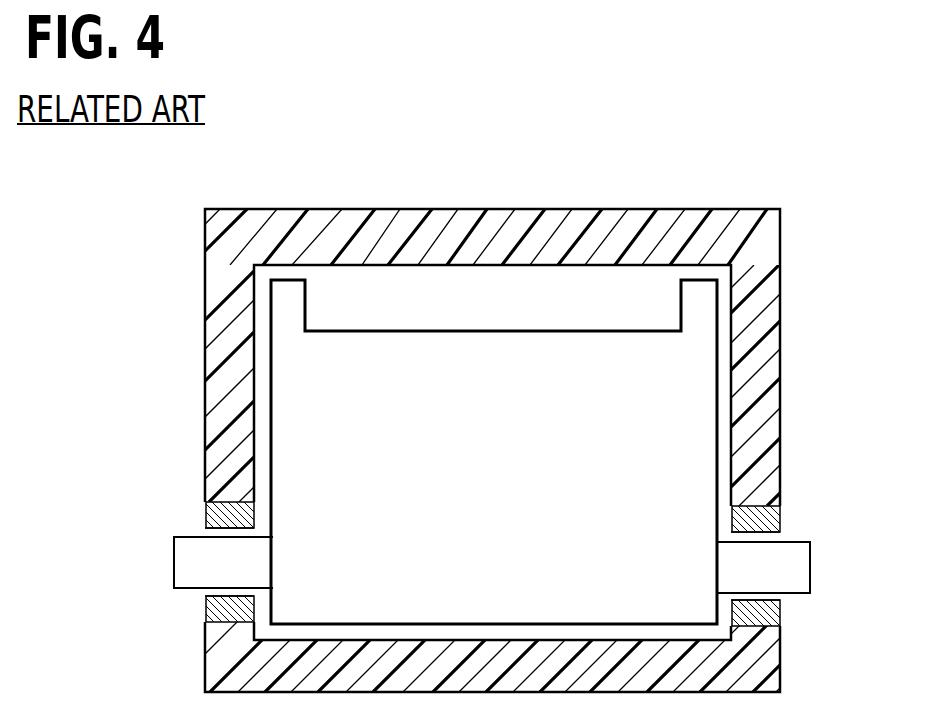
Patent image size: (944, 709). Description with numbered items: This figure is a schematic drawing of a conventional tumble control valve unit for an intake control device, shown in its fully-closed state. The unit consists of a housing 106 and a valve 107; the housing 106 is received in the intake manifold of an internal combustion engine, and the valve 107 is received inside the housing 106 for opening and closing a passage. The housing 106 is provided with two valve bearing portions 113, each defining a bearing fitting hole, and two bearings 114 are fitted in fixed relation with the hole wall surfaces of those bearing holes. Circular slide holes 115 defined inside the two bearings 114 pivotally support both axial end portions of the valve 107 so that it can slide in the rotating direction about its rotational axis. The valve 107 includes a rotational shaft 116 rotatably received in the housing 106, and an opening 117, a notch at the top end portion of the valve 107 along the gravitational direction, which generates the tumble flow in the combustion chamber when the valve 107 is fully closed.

The housing 106 is at (502, 222).
The valve 107 is at (500, 482).
The valve bearing portion 113 is at (230, 487).
The bearing 114 is at (205, 518).
The slide hole 115 is at (233, 532).
The rotational shaft 116 is at (785, 573).
The opening 117 is at (308, 306).